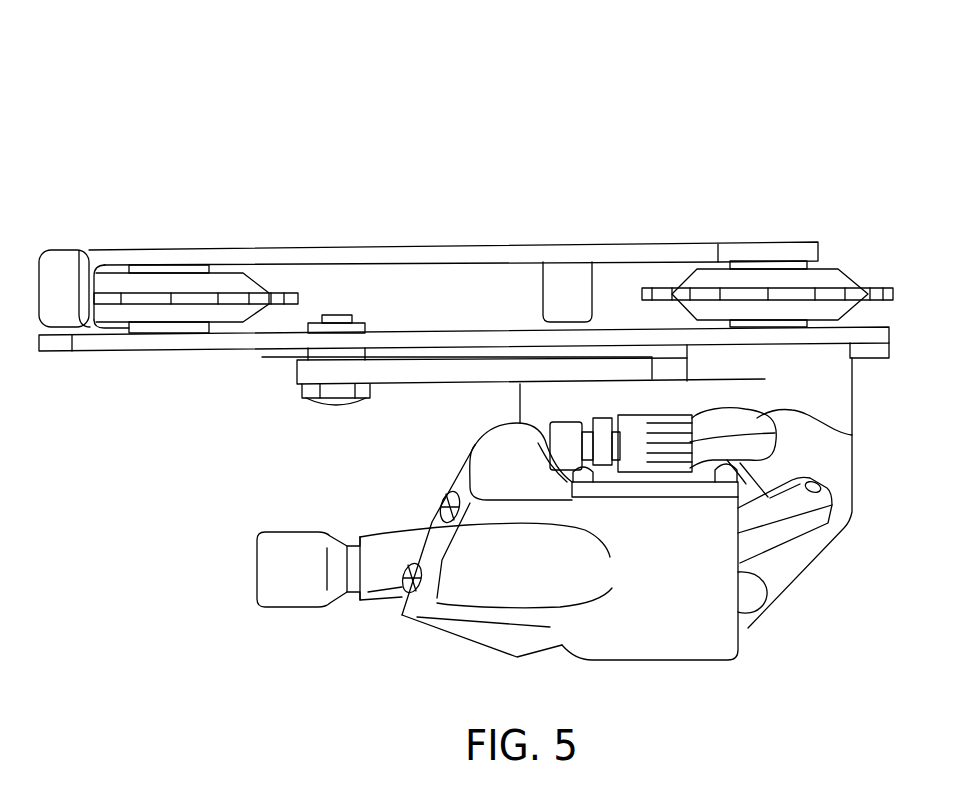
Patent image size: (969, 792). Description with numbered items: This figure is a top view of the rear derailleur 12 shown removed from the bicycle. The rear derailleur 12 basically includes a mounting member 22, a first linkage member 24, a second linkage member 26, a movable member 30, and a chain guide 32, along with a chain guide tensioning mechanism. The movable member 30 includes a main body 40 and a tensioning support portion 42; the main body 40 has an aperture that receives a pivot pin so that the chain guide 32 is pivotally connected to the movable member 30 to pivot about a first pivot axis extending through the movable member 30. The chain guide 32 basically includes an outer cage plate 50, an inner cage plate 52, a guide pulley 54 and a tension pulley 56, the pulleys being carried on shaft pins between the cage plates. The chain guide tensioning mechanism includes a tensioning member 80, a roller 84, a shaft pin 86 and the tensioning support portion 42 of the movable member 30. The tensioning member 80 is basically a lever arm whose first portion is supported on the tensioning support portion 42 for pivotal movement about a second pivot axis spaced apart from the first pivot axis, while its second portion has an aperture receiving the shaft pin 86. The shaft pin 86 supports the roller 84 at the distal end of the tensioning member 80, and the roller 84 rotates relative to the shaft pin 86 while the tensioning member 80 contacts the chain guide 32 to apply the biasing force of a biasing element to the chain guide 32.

The rear derailleur 12 is at (693, 98).
The mounting member 22 is at (660, 622).
The first linkage member 24 is at (777, 537).
The second linkage member 26 is at (852, 435).
The movable member 30 is at (832, 532).
The chain guide 32 is at (466, 257).
The main body 40 is at (823, 378).
The tensioning support portion 42 is at (547, 398).
The outer cage plate 50 is at (250, 343).
The inner cage plate 52 is at (569, 256).
The guide pulley 54 is at (838, 285).
The tension pulley 56 is at (185, 283).
The tensioning member 80 is at (428, 386).
The roller 84 is at (358, 320).
The shaft pin 86 is at (345, 407).